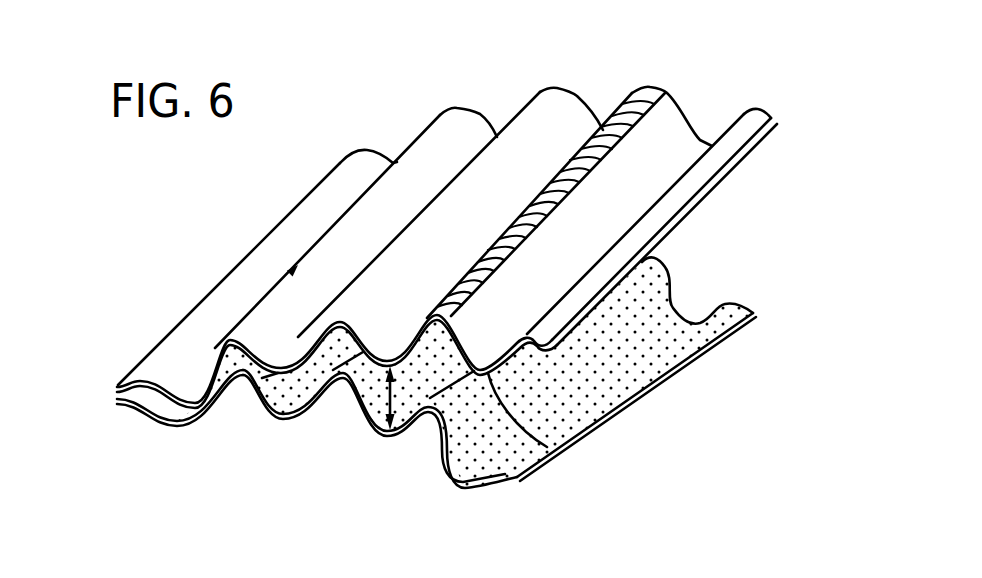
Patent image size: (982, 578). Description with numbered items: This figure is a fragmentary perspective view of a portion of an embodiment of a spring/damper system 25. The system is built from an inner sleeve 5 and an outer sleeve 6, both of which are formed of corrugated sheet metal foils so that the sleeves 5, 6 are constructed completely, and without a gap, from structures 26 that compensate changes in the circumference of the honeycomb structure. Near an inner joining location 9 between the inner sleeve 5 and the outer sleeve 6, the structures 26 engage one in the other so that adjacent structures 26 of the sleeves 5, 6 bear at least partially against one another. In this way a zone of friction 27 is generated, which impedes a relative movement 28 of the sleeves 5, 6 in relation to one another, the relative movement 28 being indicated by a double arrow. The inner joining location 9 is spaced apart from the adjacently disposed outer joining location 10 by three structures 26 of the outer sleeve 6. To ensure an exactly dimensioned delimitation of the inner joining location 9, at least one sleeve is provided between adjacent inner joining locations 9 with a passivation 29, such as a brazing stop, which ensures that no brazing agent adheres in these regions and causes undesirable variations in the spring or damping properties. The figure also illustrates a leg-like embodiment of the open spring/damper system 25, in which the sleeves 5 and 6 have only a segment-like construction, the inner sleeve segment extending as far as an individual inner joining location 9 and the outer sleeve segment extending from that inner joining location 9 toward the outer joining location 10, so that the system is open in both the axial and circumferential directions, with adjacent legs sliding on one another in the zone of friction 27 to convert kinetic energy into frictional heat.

The spring/damper system 25 is at (188, 318).
The outer joining location 10 is at (650, 100).
The outer sleeve 6 is at (633, 205).
The passivation 29 is at (588, 408).
The inner sleeve 5 is at (660, 342).
The inner joining location 9 is at (158, 407).
The structures 26 is at (440, 428).
The zone of friction 27 is at (223, 397).
The relative movement 28 is at (365, 410).